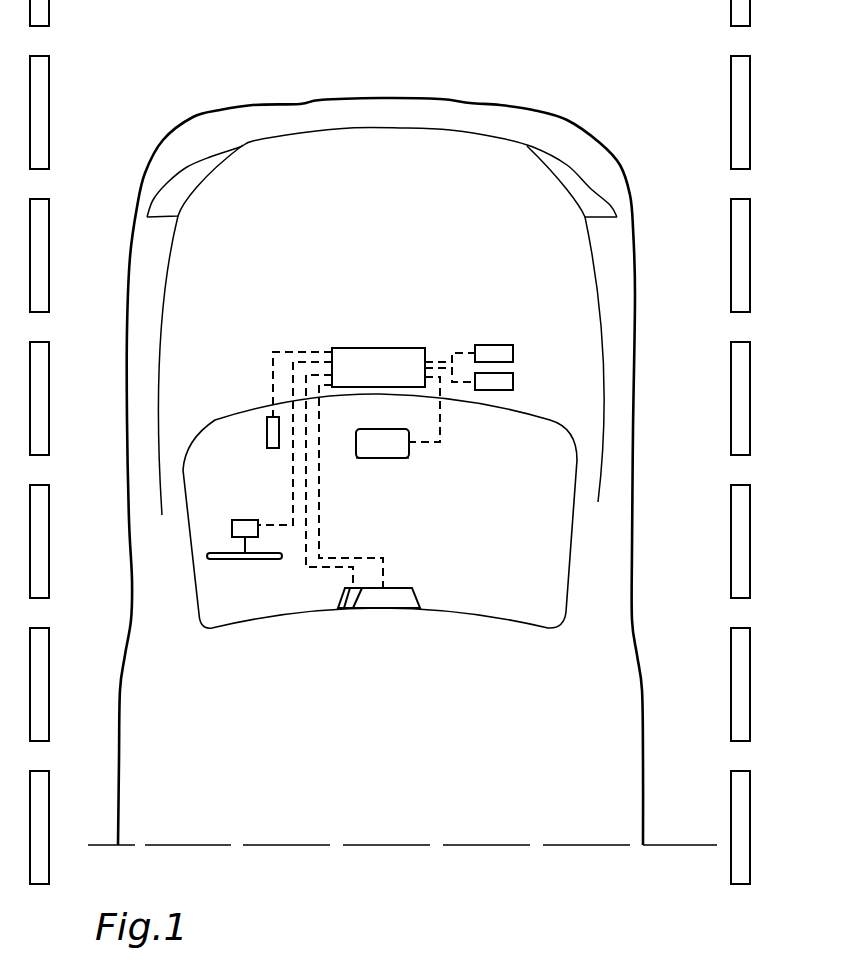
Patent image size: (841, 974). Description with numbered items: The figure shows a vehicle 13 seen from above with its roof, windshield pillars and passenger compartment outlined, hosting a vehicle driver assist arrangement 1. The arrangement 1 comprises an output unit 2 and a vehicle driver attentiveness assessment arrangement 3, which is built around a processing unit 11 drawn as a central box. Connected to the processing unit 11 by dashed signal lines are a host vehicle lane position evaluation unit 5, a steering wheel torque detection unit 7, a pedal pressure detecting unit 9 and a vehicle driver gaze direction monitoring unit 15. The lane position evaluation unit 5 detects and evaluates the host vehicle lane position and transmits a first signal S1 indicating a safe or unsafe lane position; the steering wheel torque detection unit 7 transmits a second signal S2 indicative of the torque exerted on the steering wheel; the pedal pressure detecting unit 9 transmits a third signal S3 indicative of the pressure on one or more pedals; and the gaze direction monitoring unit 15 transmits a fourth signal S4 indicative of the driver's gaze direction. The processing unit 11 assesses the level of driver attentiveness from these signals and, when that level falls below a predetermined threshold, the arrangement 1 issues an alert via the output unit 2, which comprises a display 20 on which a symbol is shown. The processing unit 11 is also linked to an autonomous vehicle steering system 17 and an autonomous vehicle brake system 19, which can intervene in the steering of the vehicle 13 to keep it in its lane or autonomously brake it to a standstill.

The vehicle driver assist arrangement 1 is at (541, 547).
The output unit 2 is at (422, 464).
The vehicle driver attentiveness assessment arrangement 3 is at (270, 316).
The host vehicle lane position evaluation unit 5 is at (383, 602).
The steering wheel torque detection unit 7 is at (243, 527).
The pedal pressure detecting unit 9 is at (268, 437).
The processing unit 11 is at (365, 378).
The vehicle 13 is at (577, 88).
The vehicle driver gaze direction monitoring unit 15 is at (340, 598).
The autonomous vehicle steering system 17 is at (487, 350).
The autonomous vehicle brake system 19 is at (507, 382).
The display 20 is at (398, 454).
The first signal S1 is at (355, 557).
The second signal S2 is at (292, 497).
The third signal S3 is at (270, 367).
The fourth signal S4 is at (319, 569).